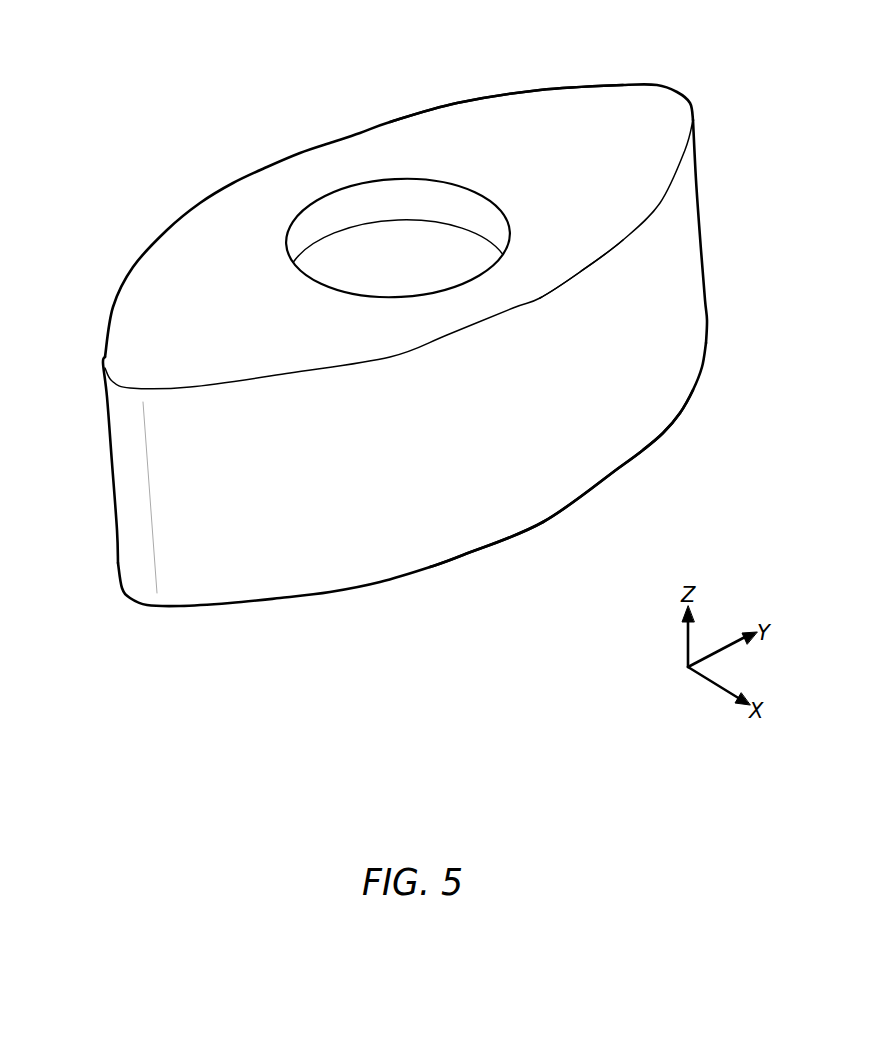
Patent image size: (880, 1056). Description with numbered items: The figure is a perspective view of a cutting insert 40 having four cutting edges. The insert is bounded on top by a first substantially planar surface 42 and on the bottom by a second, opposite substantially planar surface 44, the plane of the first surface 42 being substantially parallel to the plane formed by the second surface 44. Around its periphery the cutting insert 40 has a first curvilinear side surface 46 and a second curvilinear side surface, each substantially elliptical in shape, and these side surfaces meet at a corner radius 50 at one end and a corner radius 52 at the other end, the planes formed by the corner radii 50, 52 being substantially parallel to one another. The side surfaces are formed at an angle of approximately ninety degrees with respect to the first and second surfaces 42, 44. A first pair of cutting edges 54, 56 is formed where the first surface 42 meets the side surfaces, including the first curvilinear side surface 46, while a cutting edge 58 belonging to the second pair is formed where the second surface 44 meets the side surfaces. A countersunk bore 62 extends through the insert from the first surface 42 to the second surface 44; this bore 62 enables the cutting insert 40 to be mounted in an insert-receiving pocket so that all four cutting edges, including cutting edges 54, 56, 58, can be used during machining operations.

The cutting insert 40 is at (403, 322).
The first substantially planar surface 42 is at (563, 115).
The second substantially planar surface 44 is at (442, 567).
The first curvilinear side surface 46 is at (603, 406).
The corner radius 50 is at (702, 187).
The corner radius 52 is at (110, 456).
The cutting edge 54 is at (540, 298).
The cutting edge 56 is at (343, 132).
The cutting edge 58 is at (545, 522).
The countersunk bore 62 is at (391, 240).